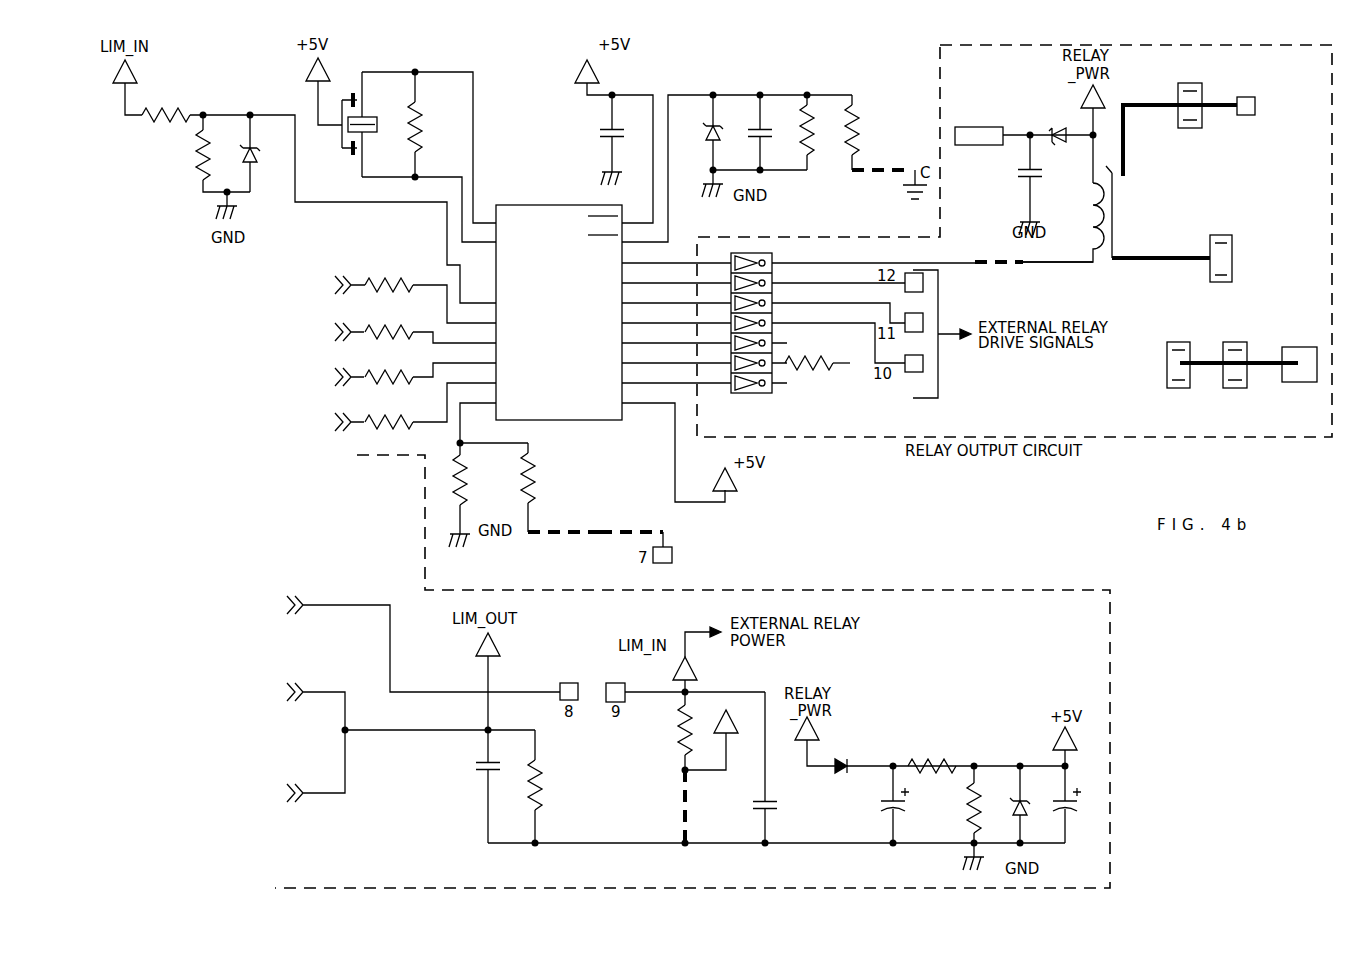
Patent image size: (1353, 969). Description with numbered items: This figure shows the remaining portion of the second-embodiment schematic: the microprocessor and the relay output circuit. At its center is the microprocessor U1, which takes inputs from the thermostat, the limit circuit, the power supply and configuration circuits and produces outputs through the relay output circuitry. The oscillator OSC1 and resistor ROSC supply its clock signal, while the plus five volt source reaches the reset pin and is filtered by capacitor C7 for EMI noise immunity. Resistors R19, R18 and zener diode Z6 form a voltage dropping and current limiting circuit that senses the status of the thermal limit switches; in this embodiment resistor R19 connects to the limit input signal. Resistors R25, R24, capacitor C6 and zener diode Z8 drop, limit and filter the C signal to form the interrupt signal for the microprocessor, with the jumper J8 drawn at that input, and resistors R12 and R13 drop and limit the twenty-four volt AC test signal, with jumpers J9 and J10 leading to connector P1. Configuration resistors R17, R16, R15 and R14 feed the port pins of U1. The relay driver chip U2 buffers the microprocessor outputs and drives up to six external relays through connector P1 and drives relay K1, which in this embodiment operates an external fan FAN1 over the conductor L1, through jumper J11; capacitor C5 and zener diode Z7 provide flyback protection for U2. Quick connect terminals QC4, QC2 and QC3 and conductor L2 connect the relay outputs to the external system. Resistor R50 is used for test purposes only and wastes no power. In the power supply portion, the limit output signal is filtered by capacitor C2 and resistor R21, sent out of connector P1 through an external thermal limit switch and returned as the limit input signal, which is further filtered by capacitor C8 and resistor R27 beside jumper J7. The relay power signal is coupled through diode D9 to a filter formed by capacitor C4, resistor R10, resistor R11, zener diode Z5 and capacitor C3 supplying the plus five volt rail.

The resistor R19 is at (166, 106).
The resistor R18 is at (207, 153).
The zener diode Z6 is at (258, 153).
The oscillator OSC1 is at (389, 113).
The resistor ROSC is at (435, 124).
The microprocessor U1 is at (564, 312).
The capacitor C7 is at (600, 126).
The zener diode Z8 is at (705, 132).
The capacitor C6 is at (753, 132).
The resistor R24 is at (793, 132).
The resistor R25 is at (868, 132).
The jumper J8 is at (879, 157).
The resistor R17 is at (415, 291).
The resistor R16 is at (415, 325).
The resistor R15 is at (415, 369).
The resistor R14 is at (415, 407).
The resistor R13 is at (475, 481).
The resistor R12 is at (544, 487).
The jumper J9 is at (564, 520).
The jumper J10 is at (631, 520).
The relay driver chip U2 is at (745, 331).
The resistor R50 is at (817, 378).
The connector P1 is at (937, 389).
The jumper J11 is at (999, 273).
The zener diode Z7 is at (1058, 124).
The capacitor C5 is at (1018, 171).
The relay K1 is at (1067, 214).
The line conductor L1 is at (1180, 130).
The quick connect terminal QC4 is at (1204, 172).
The fan FAN1 is at (1175, 230).
The quick connect terminal QC2 is at (1176, 355).
The quick connect terminal QC3 is at (1232, 355).
The line conductor L2 is at (1242, 386).
The capacitor C2 is at (473, 800).
The resistor R21 is at (553, 786).
The resistor R27 is at (667, 731).
The jumper J7 is at (670, 805).
The capacitor C8 is at (757, 767).
The diode D9 is at (852, 756).
The capacitor C4 is at (883, 804).
The resistor R10 is at (932, 756).
The resistor R11 is at (959, 804).
The zener diode Z5 is at (1027, 804).
The capacitor C3 is at (1071, 796).